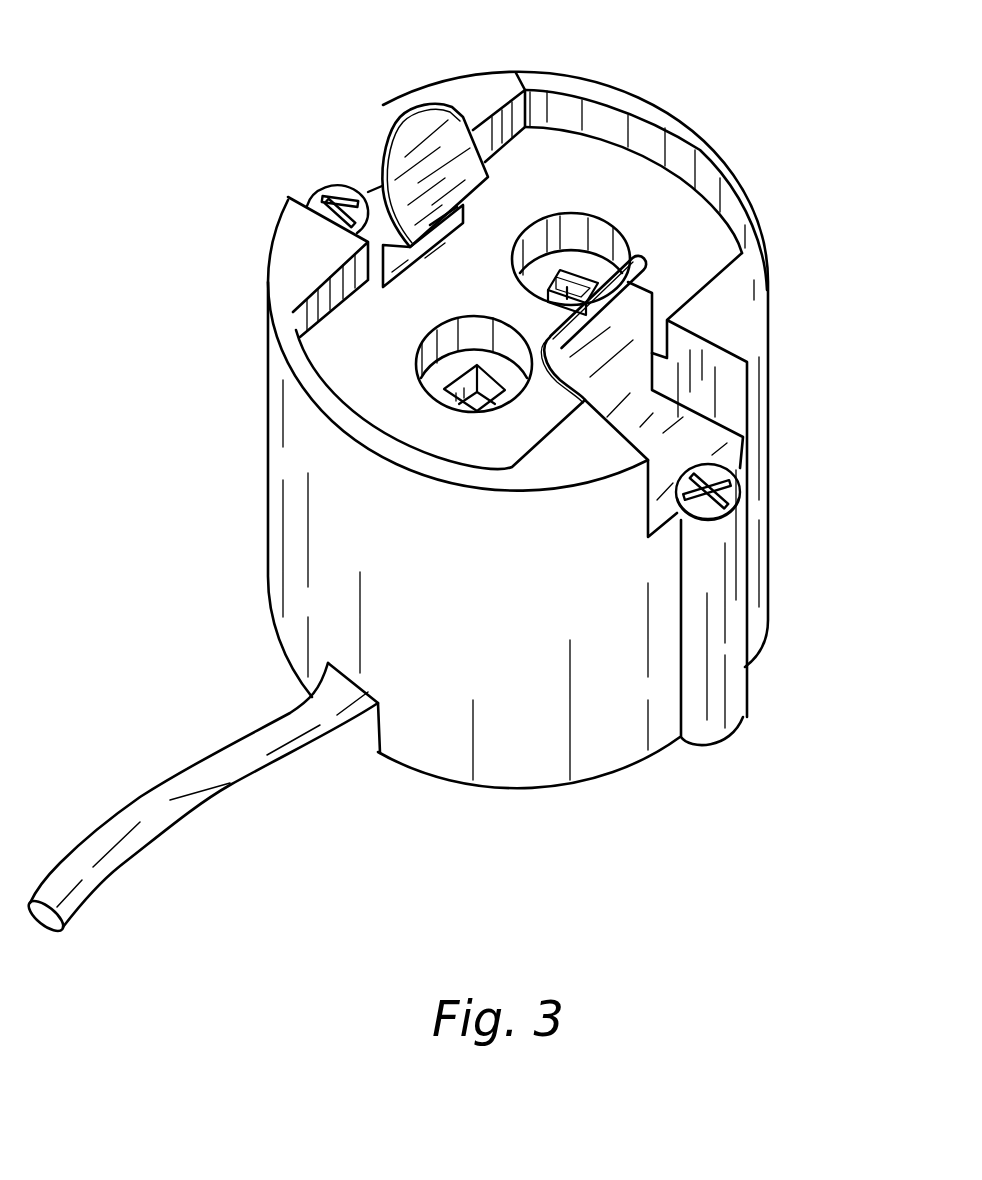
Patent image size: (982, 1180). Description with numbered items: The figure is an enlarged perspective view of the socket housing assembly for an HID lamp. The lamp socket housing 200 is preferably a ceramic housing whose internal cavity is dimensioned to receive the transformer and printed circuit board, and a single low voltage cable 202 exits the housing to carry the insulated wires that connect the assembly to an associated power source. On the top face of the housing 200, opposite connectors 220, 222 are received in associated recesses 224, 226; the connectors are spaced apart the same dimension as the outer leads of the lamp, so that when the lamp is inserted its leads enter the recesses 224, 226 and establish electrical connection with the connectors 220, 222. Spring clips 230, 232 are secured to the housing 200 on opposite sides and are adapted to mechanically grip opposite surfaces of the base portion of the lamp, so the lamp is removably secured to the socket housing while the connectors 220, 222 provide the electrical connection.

The lamp socket housing 200 is at (782, 453).
The cable 202 is at (155, 800).
The connector 220 is at (580, 278).
The connector 222 is at (446, 410).
The recess 224 is at (573, 212).
The recess 226 is at (447, 315).
The spring clip 230 is at (464, 128).
The spring clip 232 is at (645, 266).